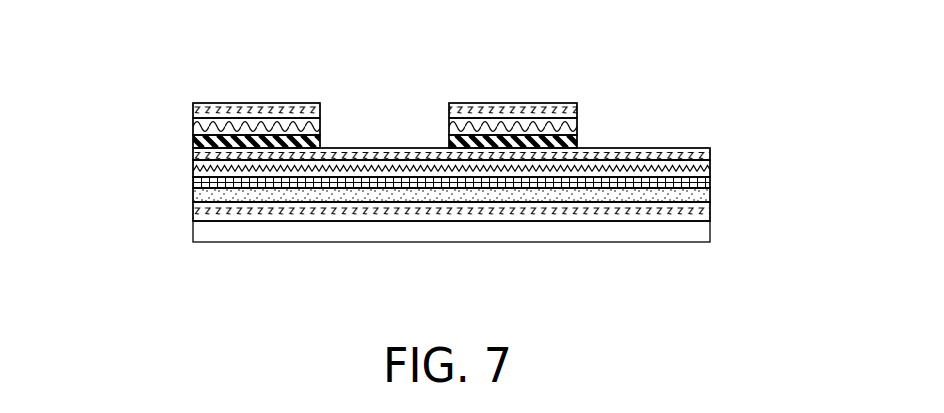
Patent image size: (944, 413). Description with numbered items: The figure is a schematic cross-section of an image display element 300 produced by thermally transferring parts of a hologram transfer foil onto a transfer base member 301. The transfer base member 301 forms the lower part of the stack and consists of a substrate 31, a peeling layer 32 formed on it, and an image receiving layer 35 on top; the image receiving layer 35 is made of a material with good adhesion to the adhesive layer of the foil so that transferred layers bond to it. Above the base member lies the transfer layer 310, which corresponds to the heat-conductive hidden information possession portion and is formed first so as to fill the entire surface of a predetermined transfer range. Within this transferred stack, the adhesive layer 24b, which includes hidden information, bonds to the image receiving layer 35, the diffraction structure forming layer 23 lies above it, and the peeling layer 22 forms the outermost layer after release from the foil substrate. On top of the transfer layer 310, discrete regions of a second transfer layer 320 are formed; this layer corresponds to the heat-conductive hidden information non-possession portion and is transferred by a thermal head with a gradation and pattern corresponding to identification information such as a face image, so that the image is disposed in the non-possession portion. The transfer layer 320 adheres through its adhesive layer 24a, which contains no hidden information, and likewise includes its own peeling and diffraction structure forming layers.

The image display element 300 is at (454, 164).
The transfer layer 310 is at (481, 194).
The transfer layer 320 is at (192, 105).
The transfer base member 301 is at (392, 230).
The peeling layer 22 is at (668, 153).
The diffraction structure forming layer 23 is at (593, 170).
The adhesive layer 24a is at (313, 143).
The adhesive layer 24b is at (380, 181).
The image receiving layer 35 is at (200, 195).
The peeling layer 32 is at (200, 212).
The substrate 31 is at (202, 234).